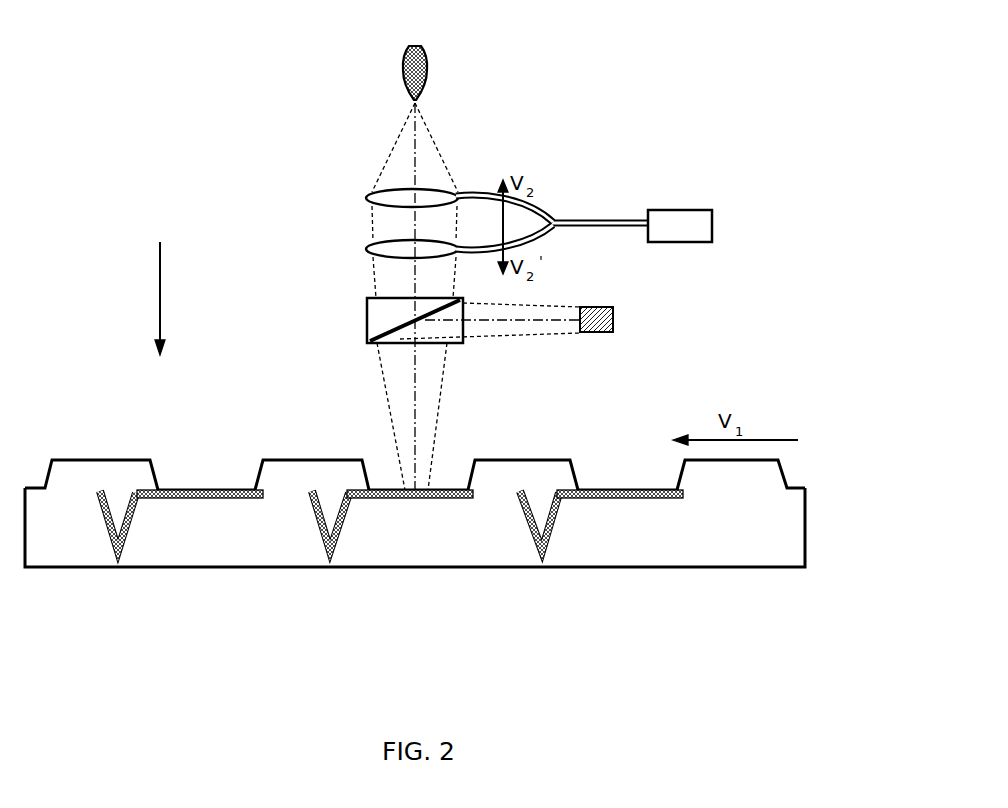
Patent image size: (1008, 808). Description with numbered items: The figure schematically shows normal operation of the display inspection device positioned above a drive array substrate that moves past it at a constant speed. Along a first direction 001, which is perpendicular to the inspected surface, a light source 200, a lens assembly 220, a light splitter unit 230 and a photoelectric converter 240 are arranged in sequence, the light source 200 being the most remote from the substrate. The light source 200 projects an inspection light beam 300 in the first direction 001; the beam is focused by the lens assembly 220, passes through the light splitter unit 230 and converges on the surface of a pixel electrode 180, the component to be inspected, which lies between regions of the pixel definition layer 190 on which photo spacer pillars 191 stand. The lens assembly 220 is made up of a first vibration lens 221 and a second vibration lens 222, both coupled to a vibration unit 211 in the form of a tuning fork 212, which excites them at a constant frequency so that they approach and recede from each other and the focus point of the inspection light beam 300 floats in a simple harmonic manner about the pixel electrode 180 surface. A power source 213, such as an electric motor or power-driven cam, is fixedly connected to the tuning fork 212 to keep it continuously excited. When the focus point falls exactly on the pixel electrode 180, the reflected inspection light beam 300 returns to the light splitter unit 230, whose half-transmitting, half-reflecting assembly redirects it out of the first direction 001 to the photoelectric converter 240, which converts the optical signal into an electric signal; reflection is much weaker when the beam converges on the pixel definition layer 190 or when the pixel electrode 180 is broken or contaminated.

The light source 200 is at (428, 68).
The inspection light beam 300 is at (404, 125).
The lens assembly 220 is at (321, 226).
The first vibration lens 221 is at (366, 197).
The second vibration lens 222 is at (366, 250).
The vibration unit 211 is at (469, 218).
The tuning fork 212 is at (575, 221).
The power source 213 is at (680, 226).
The light splitter unit 230 is at (367, 322).
The photoelectric converter 240 is at (600, 307).
The first direction 001 is at (132, 298).
The pixel definition layer 190 is at (765, 540).
The photo spacer pillars 191 is at (765, 470).
The pixel electrode 180 is at (195, 498).